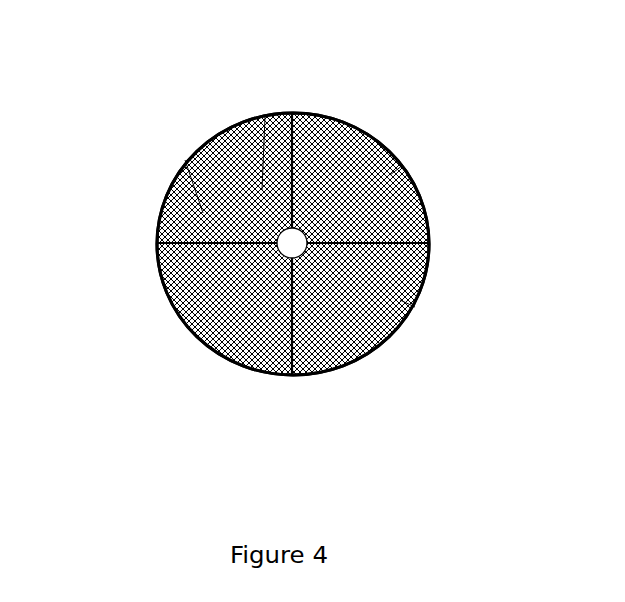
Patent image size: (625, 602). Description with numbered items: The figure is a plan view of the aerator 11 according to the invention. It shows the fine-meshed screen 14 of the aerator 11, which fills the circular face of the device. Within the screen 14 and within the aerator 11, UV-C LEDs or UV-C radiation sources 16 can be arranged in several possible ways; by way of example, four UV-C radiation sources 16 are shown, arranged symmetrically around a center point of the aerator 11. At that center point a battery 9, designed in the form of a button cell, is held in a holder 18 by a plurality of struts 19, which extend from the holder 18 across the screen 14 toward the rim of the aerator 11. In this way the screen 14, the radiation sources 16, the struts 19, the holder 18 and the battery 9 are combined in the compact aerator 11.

The battery 9 is at (218, 357).
The aerator 11 is at (120, 267).
The fine-meshed screen 14 is at (357, 363).
The UV-C radiation sources 16 is at (202, 145).
The holder 18 is at (352, 122).
The struts 19 is at (278, 117).